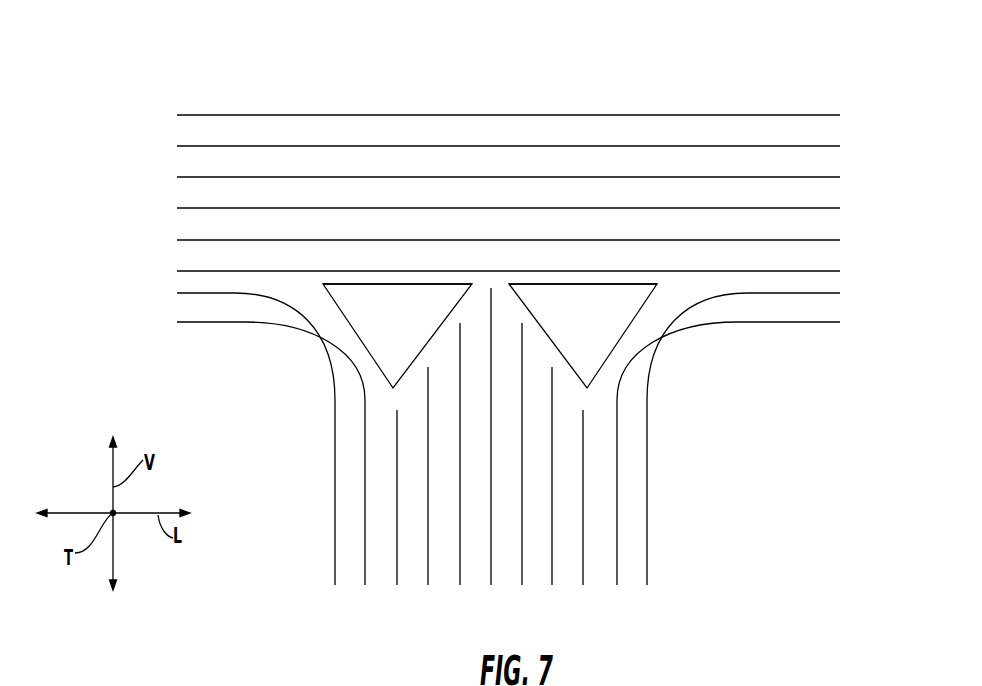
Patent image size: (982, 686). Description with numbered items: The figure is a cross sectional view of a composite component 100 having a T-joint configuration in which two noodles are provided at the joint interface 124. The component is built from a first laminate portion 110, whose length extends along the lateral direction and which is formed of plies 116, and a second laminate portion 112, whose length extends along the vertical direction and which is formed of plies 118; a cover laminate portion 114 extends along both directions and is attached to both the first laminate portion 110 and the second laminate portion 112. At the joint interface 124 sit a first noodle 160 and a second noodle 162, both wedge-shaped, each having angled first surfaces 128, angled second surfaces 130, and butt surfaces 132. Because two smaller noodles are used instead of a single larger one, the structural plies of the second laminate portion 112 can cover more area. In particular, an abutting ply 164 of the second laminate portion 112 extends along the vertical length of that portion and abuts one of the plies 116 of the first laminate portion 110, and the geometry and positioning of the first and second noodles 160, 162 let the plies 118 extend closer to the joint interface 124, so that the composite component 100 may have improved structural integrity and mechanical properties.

The composite component 100 is at (224, 56).
The first laminate portion 110 is at (850, 110).
The second laminate portion 112 is at (591, 592).
The cover laminate portion 114 is at (177, 283).
The plies 116 is at (698, 274).
The plies 118 is at (410, 519).
The joint interface 124 is at (491, 271).
The angled first surfaces 128 is at (445, 342).
The angled second surfaces 130 is at (345, 329).
The butt surfaces 132 is at (397, 270).
The first noodle 160 is at (362, 295).
The second noodle 162 is at (627, 295).
The abutting ply 164 is at (491, 505).